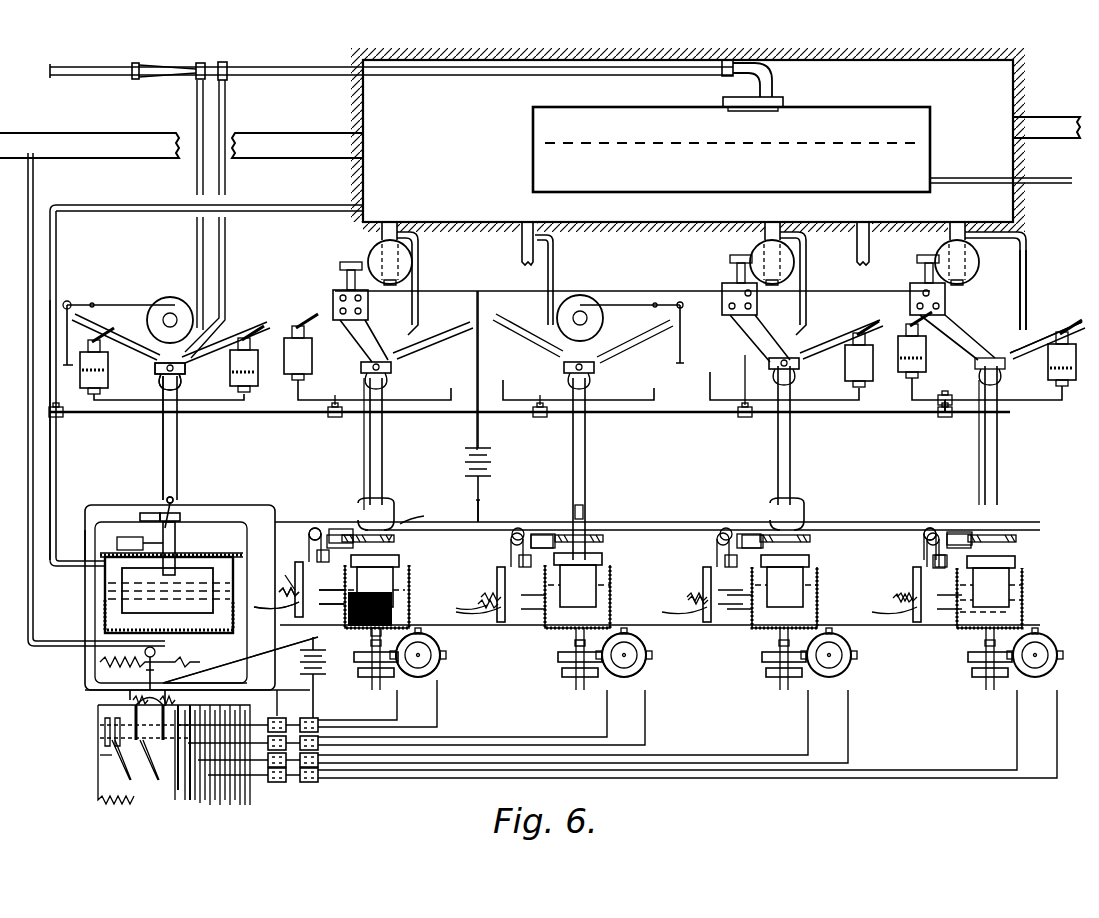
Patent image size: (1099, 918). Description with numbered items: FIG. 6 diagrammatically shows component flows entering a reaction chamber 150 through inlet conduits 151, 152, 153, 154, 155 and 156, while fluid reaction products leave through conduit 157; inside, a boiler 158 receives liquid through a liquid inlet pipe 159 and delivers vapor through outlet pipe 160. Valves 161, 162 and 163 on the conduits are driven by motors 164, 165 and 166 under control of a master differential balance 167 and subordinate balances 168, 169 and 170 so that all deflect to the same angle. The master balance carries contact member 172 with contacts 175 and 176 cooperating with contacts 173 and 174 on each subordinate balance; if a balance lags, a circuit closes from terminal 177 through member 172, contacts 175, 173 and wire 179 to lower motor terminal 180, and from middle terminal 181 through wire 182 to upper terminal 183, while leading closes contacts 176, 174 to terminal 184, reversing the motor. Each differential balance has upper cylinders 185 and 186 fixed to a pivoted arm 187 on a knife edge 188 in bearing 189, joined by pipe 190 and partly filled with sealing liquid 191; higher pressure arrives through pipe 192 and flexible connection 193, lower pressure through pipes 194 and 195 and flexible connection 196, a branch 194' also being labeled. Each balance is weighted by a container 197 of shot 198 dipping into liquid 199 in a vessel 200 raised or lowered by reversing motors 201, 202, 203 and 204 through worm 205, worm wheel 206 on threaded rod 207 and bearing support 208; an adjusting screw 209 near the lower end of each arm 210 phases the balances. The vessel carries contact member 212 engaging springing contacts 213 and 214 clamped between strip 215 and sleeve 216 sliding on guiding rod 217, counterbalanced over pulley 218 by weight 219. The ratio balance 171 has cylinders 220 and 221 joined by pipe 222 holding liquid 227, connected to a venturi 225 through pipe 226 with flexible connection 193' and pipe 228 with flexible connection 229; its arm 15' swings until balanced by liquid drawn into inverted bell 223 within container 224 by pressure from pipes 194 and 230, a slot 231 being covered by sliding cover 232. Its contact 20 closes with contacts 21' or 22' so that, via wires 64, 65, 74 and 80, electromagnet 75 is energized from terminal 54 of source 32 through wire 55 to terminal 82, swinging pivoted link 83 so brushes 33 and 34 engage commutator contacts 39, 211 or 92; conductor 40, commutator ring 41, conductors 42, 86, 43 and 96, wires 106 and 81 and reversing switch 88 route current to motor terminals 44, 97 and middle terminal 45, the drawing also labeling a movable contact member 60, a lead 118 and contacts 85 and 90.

The reaction chamber 150 is at (688, 140).
The boiler 158 is at (731, 149).
The outlet pipe 160 is at (296, 80).
The venturi 225 is at (162, 70).
The pipe 226 is at (224, 242).
The pipe 228 is at (197, 240).
The conduit 157 is at (181, 145).
The pipe 230 is at (32, 608).
The pipe 194 is at (206, 377).
The pipe branch 194' is at (70, 430).
The inlet conduit 156 is at (1046, 127).
The liquid inlet pipe 159 is at (1026, 184).
The inlet conduit 151 is at (382, 237).
The inlet conduit 152 is at (522, 237).
The inlet conduit 153 is at (765, 237).
The inlet conduit 154 is at (857, 237).
The inlet conduit 155 is at (950, 237).
The pipe 192 is at (1027, 266).
The valve 161 is at (413, 260).
The valve 162 is at (796, 260).
The valve 163 is at (968, 260).
The motor 164 is at (338, 282).
The middle terminal 181 is at (340, 296).
The lower terminal 180 is at (340, 309).
The terminal 184 is at (362, 300).
The wire 182 is at (440, 296).
The upper terminal 183 is at (485, 296).
The motor 165 is at (726, 280).
The motor 166 is at (912, 281).
The flexible connection 229 is at (198, 300).
The flexible connection 193' is at (167, 319).
The major balance 171 is at (178, 438).
The knife edge 188 is at (995, 361).
The bearing 189 is at (1008, 380).
The cylinder 221 is at (108, 369).
The cylinder 220 is at (256, 376).
The pipe 222 is at (190, 400).
The liquid 227 is at (264, 396).
The pipe 195 is at (861, 424).
The subordinate balance 168 is at (382, 433).
The wire 179 is at (365, 460).
The master differential balance 167 is at (588, 445).
The subordinate balance 169 is at (790, 438).
The subordinate balance 170 is at (998, 416).
The pivoted arm 187 is at (998, 448).
The upper cylinder 185 is at (884, 330).
The sealing liquid 191 is at (900, 368).
The flexible connection 196 is at (954, 400).
The cylinder 186 is at (1048, 363).
The pipe 190 is at (1036, 396).
The flexible connection 193 is at (1046, 324).
The terminal 177 is at (475, 478).
The conductor 118 is at (478, 505).
The contact member 172 is at (636, 526).
The responsive arm 15' is at (184, 438).
The contact member 20 is at (165, 500).
The wire 65 is at (206, 505).
The wire 106 is at (212, 530).
The contact 22' is at (139, 517).
The contact member 21' is at (184, 513).
The wire 74 is at (85, 537).
The sliding cover 232 is at (170, 535).
The container 224 is at (195, 553).
The slot 231 is at (115, 568).
The inverted bell 223 is at (169, 590).
The wire 64 is at (280, 563).
The vertical movable contact member 60 is at (280, 586).
The springing contact member 214 is at (280, 598).
The springing contact member 213 is at (274, 613).
The contact member 212 is at (736, 588).
The fixed guiding rod 217 is at (718, 537).
The sleeve 216 is at (718, 552).
The terminal 54 is at (295, 640).
The source of electrical energy 32 is at (299, 663).
The pivoted link member 83 is at (176, 661).
The conductor 86 is at (206, 661).
The electromagnet 75 is at (125, 666).
The wire 80 is at (198, 698).
The brush 33 is at (130, 708).
The brush 34 is at (166, 704).
The commutator contact 39 is at (191, 708).
The conductor 40 is at (220, 708).
The commutator ring 41 is at (164, 808).
The commutator contact 211 is at (102, 708).
The contact 85 is at (96, 722).
The contact 90 is at (96, 736).
The contact member 92 is at (96, 748).
The conductor 42 is at (250, 725).
The selective reversing switch 88 is at (290, 716).
The wire 81 is at (316, 710).
The terminal 82 is at (314, 690).
The conductor 96 is at (435, 703).
The conductor 43 is at (397, 703).
The motor terminal 44 is at (386, 686).
The middle terminal 45 is at (428, 620).
The wire 55 is at (450, 622).
The container 197 is at (1000, 578).
The liquid 199 is at (1025, 588).
The shot 198 is at (398, 590).
The vessel 200 is at (818, 594).
The reversing motor 201 is at (437, 646).
The motor terminal 97 is at (440, 658).
The reversing motor 202 is at (648, 646).
The worm 205 is at (648, 666).
The worm wheel 206 is at (554, 657).
The bearing support 208 is at (560, 674).
The rod 207 is at (574, 684).
The reversing motor 203 is at (853, 653).
The reversing motor 204 is at (1060, 647).
The contact 173 is at (780, 506).
The contact 174 is at (794, 506).
The contact 176 is at (420, 524).
The contact 175 is at (350, 528).
The arm 210 is at (1008, 534).
The adjusting screw 209 is at (955, 535).
The pulley 218 is at (924, 533).
The weight 219 is at (932, 556).
The strip 215 is at (687, 600).